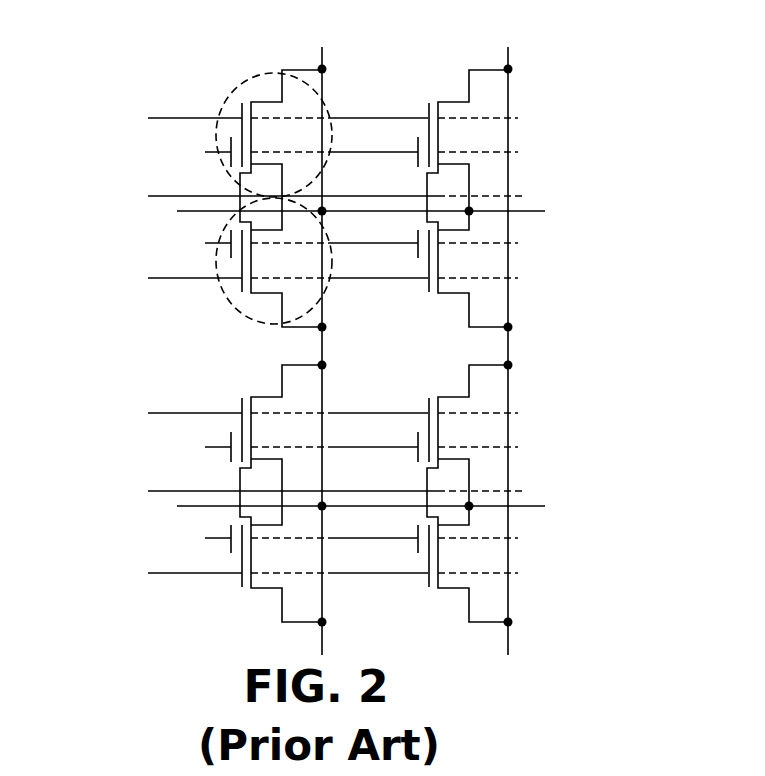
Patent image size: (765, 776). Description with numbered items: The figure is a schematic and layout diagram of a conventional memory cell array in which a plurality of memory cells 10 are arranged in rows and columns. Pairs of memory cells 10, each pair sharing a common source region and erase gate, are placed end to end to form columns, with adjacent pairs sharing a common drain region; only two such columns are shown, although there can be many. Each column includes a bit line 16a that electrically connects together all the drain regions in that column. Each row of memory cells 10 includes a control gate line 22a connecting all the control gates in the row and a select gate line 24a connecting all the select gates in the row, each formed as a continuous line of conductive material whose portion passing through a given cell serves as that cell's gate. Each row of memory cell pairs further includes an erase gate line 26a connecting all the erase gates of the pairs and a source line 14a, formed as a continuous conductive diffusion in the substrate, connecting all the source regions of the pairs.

The memory cell 10 is at (228, 102).
The source line 14a is at (389, 359).
The bit line 16a is at (417, 333).
The control gate line 22a is at (335, 345).
The select gate line 24a is at (302, 344).
The erase gate line 26a is at (305, 343).